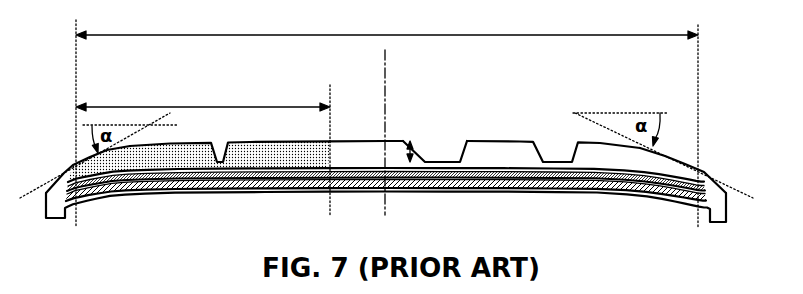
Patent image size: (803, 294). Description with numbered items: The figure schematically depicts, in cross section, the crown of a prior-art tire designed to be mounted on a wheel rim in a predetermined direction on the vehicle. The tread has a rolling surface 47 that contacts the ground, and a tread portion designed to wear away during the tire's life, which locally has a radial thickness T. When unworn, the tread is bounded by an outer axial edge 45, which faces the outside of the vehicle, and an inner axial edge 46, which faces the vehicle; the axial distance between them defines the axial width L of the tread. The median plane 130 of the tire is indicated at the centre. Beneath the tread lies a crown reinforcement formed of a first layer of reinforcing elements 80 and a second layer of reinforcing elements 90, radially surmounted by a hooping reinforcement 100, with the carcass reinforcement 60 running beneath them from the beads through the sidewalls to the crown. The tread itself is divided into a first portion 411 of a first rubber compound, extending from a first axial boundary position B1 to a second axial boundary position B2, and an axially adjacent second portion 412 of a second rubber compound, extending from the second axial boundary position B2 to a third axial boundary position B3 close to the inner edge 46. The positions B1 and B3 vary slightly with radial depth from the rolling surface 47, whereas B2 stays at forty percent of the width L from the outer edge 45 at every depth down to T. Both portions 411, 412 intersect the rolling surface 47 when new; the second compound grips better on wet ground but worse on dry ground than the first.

The outer axial edge 45 is at (71, 156).
The inner axial edge 46 is at (696, 155).
The rolling surface 47 is at (400, 130).
The carcass reinforcement 60 is at (97, 193).
The first layer of reinforcing elements 80 is at (172, 180).
The second layer of reinforcing elements 90 is at (223, 174).
The hooping reinforcement 100 is at (270, 170).
The median plane 130 is at (388, 210).
The first portion 411 is at (245, 152).
The second portion 412 is at (502, 152).
The first axial boundary position B1 is at (72, 173).
The second axial boundary position B2 is at (328, 139).
The third axial boundary position B3 is at (705, 167).
The radial thickness T is at (418, 150).
The axial width L is at (387, 120).